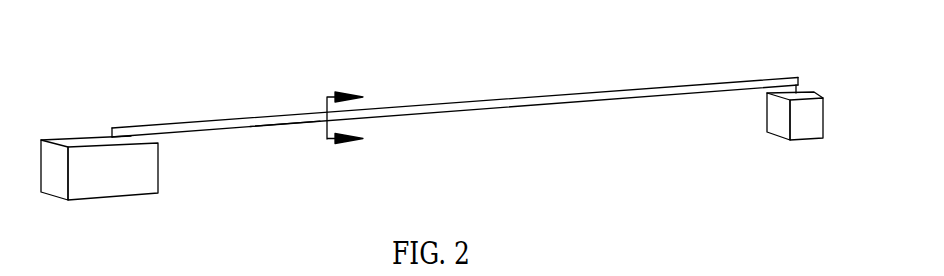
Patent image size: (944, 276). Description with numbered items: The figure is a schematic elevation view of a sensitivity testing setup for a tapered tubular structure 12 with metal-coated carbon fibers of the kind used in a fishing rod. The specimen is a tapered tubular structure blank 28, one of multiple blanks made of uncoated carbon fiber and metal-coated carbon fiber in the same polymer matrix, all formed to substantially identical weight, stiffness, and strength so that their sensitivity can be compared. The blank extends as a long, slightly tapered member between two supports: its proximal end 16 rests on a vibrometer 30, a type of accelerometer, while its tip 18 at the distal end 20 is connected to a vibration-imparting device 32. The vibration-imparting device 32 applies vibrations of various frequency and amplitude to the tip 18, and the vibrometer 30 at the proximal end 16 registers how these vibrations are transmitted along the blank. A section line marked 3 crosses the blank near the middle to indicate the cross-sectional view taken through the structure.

The tapered tubular structure 12 is at (433, 104).
The proximal end 16 is at (92, 103).
The tip 18 is at (798, 77).
The distal end 20 is at (827, 65).
The tapered tubular structure blank 28 is at (282, 125).
The section line 3- 3 is at (356, 115).
The vibrometer 30 is at (103, 180).
The vibration-imparting device 32 is at (768, 120).